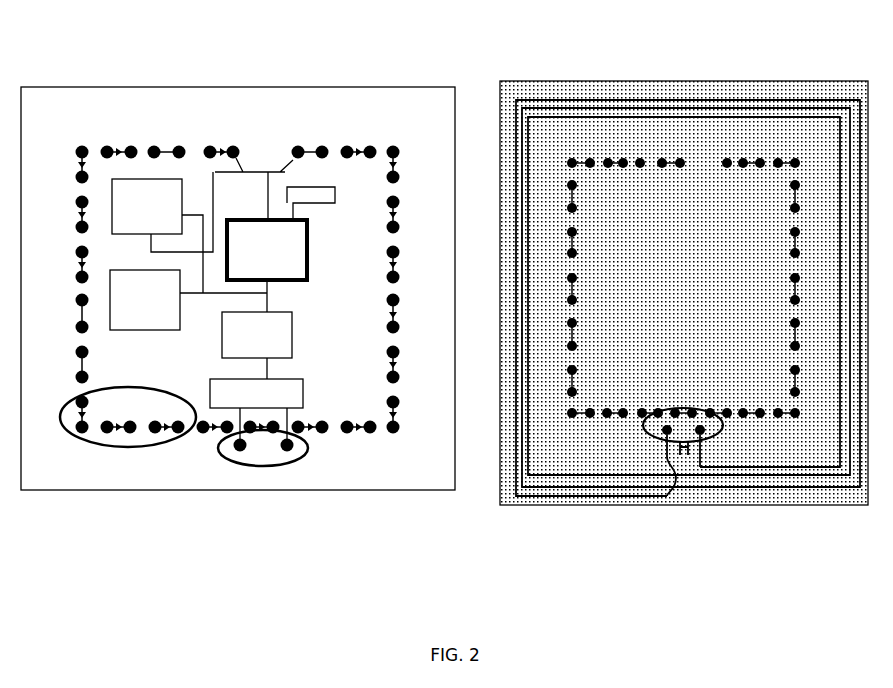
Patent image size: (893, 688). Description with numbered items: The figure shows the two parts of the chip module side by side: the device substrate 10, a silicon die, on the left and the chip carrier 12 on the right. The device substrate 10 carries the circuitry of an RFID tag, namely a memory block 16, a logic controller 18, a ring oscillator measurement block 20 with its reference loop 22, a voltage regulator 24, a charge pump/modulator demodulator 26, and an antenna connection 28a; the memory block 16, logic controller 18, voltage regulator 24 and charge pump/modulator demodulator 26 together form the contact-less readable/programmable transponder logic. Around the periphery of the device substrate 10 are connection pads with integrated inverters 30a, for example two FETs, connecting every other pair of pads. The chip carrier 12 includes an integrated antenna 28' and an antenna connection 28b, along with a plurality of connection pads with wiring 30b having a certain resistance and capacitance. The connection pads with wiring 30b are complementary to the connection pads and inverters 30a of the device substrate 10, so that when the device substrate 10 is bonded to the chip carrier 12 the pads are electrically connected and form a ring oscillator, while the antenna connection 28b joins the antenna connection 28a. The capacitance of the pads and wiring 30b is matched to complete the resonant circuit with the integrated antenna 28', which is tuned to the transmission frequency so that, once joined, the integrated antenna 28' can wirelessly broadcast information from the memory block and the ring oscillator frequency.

The device substrate 10 is at (413, 102).
The chip carrier 12 is at (677, 93).
The memory block 16 is at (173, 177).
The logic controller 18 is at (153, 330).
The ring oscillator measurement block 20 is at (307, 247).
The reference loop 22 is at (335, 200).
The voltage regulator 24 is at (292, 330).
The charge pump/modulator demodulator 26 is at (303, 383).
The antenna connection 28a is at (262, 462).
The antenna connection 28b is at (684, 456).
The integrated antenna 28' is at (688, 334).
The integrated inverters 30a is at (120, 449).
The connection pads with wiring 30b is at (622, 158).